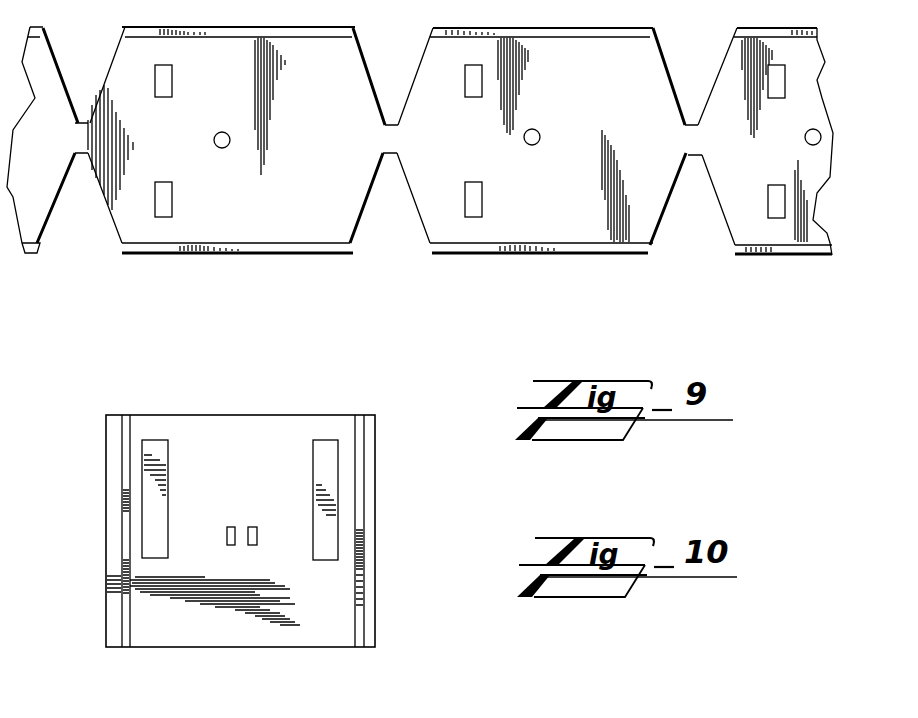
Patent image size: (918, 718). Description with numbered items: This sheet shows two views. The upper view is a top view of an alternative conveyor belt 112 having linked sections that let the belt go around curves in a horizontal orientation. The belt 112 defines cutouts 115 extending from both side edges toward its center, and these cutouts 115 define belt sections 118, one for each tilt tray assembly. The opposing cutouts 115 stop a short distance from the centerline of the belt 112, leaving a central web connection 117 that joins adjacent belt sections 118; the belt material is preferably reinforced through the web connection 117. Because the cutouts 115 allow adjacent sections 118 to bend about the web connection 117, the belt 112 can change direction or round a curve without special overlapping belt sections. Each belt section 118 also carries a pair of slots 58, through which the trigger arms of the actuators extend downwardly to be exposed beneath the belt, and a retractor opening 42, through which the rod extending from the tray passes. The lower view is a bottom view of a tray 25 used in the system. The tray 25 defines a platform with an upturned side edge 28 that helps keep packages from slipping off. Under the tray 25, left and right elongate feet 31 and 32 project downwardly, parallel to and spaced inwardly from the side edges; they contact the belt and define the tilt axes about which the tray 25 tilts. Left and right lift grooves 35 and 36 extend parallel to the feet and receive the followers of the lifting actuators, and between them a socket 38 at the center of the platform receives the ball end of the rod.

In FIG. 9, the belt 112 is at (200, 57).
In FIG. 9, the cutouts 115 is at (370, 78).
In FIG. 9, the central web connection 117 is at (692, 137).
In FIG. 9, the belt sections 118 is at (488, 227).
In FIG. 9, the slot 58 is at (172, 83).
In FIG. 9, the retractor opening 42 is at (230, 140).
In FIG. 10, the tray 25 is at (395, 594).
In FIG. 10, the left upturned side edge 28 is at (105, 532).
In FIG. 10, the left elongate foot 31 is at (127, 602).
In FIG. 10, the right elongate foot 32 is at (358, 467).
In FIG. 10, the left lift groove 35 is at (168, 468).
In FIG. 10, the right lift groove 36 is at (313, 470).
In FIG. 10, the socket 38 is at (227, 538).